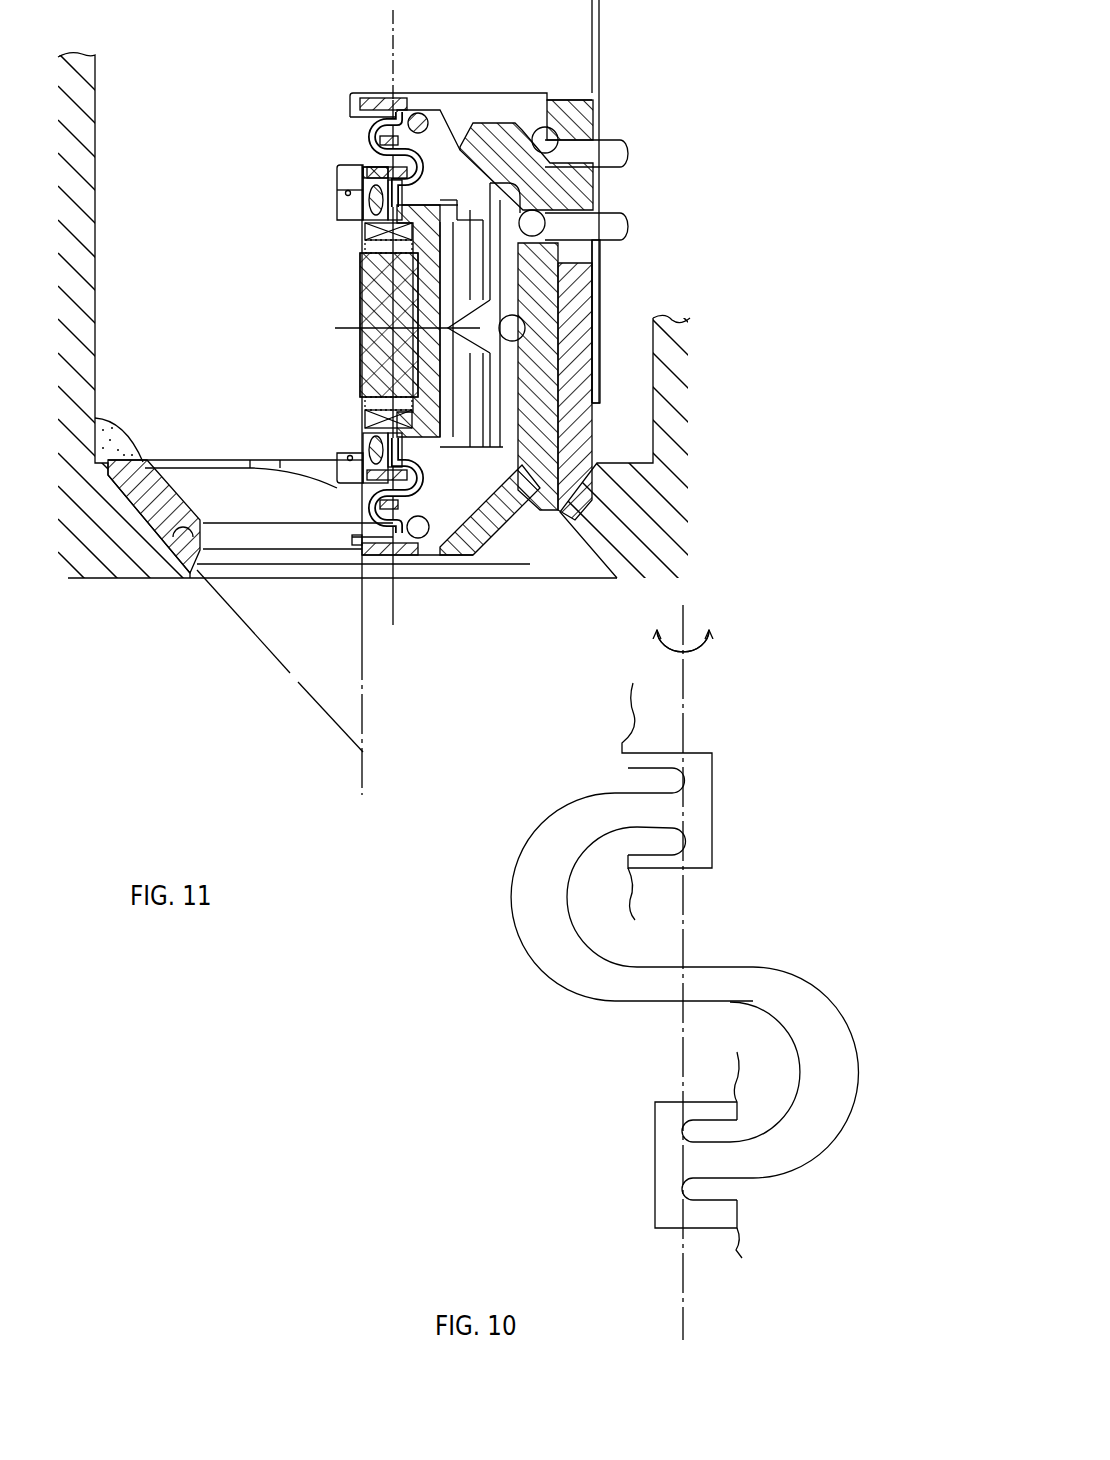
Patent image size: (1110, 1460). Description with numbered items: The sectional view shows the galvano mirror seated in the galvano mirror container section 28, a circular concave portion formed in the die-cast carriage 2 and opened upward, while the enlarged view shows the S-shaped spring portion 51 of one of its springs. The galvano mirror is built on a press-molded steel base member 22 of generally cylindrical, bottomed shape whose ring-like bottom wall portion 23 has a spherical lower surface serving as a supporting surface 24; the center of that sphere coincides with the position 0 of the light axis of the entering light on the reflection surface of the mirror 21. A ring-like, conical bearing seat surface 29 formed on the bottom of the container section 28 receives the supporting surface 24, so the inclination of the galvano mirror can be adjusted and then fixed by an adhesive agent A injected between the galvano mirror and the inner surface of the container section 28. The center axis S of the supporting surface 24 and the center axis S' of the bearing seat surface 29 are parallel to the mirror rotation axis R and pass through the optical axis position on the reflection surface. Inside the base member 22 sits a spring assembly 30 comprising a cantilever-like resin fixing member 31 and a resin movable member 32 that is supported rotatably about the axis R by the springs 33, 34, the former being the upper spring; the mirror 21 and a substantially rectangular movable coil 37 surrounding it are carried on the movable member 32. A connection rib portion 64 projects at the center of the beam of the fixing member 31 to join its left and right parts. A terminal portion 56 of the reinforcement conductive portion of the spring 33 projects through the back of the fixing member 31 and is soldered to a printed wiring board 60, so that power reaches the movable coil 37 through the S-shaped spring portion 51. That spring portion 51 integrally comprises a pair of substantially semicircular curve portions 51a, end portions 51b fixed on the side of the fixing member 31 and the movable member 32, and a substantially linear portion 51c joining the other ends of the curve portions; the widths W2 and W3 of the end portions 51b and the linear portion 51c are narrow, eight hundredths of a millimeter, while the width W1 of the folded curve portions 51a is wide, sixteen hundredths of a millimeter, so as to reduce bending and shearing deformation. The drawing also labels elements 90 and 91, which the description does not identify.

In FIG. 11, the carriage 2 is at (66, 588).
In FIG. 11, the mirror 21 is at (358, 300).
In FIG. 11, the base member 22 is at (580, 430).
In FIG. 11, the bottom wall portion 23 is at (185, 495).
In FIG. 11, the supporting surface 24 is at (147, 527).
In FIG. 11, the galvano mirror container section 28 is at (148, 256).
In FIG. 11, the bearing seat surface 29 is at (190, 578).
In FIG. 11, the spring assembly 30 is at (553, 303).
In FIG. 11, the fixing member 31 is at (543, 333).
In FIG. 10, the fixing member 31 is at (622, 738).
In FIG. 11, the movable member 32 is at (395, 283).
In FIG. 10, the movable member 32 is at (742, 1250).
In FIG. 11, the upper spring 33 is at (470, 93).
In FIG. 11, the spring 34 is at (455, 520).
In FIG. 11, the movable coil 37 is at (377, 233).
In FIG. 11, the S-shaped spring portion 51 is at (370, 137).
In FIG. 10, the S-shaped spring portion 51 is at (558, 997).
In FIG. 10, the curve portions 51a is at (535, 830).
In FIG. 10, the end portions 51b is at (655, 797).
In FIG. 10, the linear portion 51c is at (712, 983).
In FIG. 11, the terminal portion 56 is at (627, 154).
In FIG. 11, the printed wiring board 60 is at (602, 20).
In FIG. 11, the connection rib portion 64 is at (513, 380).
In FIG. 11, the screw hole 90 is at (548, 140).
In FIG. 11, the hole 91 is at (512, 328).
In FIG. 11, the adhesive agent A is at (120, 425).
In FIG. 11, the position of the light axis 0 is at (356, 332).
In FIG. 11, the mirror rotation axis R is at (397, 20).
In FIG. 10, the mirror rotation axis R is at (688, 700).
In FIG. 11, the center axis of the supporting surface S is at (365, 780).
In FIG. 10, the width of the curve portions W1 is at (600, 893).
In FIG. 10, the width of the end portions W2 is at (640, 742).
In FIG. 10, the width of the linear portion W3 is at (662, 937).